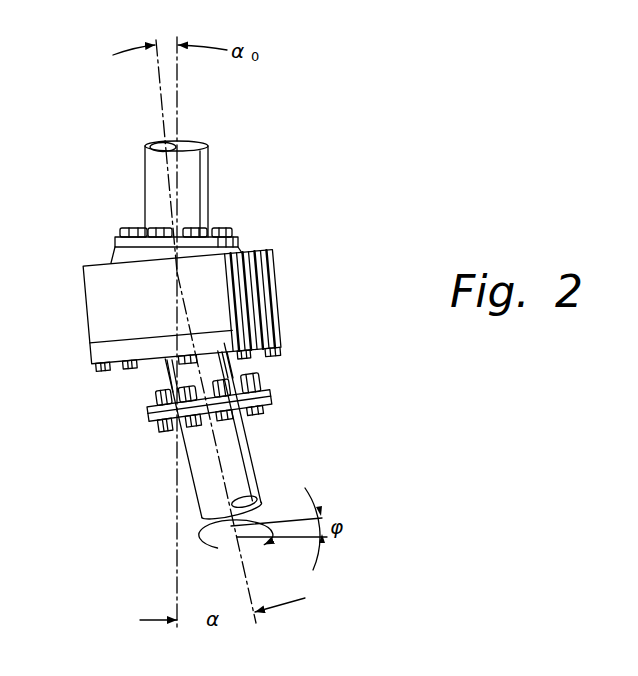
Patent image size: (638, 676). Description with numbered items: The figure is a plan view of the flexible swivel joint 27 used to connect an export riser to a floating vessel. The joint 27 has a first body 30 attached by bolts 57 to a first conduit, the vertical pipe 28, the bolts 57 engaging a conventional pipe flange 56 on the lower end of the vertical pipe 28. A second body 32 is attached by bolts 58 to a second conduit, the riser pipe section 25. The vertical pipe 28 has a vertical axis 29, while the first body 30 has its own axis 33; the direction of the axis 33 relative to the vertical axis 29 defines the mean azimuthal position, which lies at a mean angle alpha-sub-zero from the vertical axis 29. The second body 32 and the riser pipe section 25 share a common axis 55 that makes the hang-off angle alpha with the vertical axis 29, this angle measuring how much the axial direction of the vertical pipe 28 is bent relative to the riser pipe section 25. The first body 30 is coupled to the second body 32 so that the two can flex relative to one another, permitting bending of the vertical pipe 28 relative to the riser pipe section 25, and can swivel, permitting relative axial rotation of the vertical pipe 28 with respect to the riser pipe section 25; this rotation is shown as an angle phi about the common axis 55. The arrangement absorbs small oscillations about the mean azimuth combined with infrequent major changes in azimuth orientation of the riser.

The riser pipe section 25 is at (247, 423).
The flexible swivel joint 27 is at (283, 289).
The vertical pipe 28 is at (208, 177).
The vertical axis 29 is at (178, 110).
The first body 30 is at (272, 251).
The second body 32 is at (232, 367).
The axis of the first body 33 is at (162, 110).
The common axis 55 is at (222, 450).
The pipe flange 56 is at (117, 243).
The bolts 57 is at (118, 222).
The bolts 58 is at (132, 433).